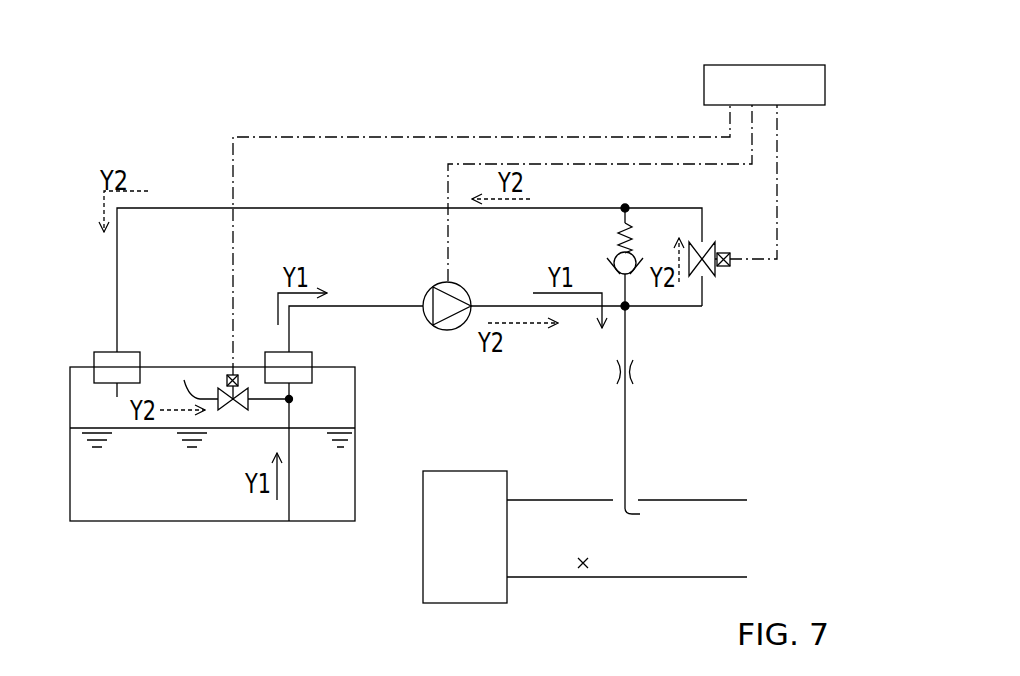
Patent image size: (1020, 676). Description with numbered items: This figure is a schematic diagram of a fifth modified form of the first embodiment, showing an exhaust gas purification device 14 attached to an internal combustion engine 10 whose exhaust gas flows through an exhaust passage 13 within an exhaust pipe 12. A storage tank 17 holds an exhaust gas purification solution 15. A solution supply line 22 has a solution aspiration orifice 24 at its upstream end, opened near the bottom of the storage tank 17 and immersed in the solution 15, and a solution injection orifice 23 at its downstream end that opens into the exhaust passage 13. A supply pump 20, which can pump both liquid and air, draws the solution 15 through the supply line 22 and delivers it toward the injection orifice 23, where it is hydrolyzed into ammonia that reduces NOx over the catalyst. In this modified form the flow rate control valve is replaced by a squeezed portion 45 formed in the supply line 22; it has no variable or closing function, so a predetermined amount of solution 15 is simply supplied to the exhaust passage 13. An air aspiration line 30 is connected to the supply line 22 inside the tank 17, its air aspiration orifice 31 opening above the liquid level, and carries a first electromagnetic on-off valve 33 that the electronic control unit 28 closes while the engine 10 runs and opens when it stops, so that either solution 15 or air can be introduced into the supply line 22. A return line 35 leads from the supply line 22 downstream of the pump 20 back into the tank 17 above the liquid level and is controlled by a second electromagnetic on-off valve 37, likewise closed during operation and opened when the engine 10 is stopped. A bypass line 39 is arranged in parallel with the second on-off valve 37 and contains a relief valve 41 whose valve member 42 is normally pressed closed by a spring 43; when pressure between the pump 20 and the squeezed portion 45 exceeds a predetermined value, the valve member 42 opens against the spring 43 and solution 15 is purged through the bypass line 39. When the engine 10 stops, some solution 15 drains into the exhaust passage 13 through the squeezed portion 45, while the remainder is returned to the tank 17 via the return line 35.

The internal combustion engine 10 is at (462, 483).
The exhaust pipe 12 is at (685, 500).
The exhaust passage 13 is at (583, 575).
The exhaust gas purification device 14 is at (198, 172).
The exhaust gas purification solution 15 is at (173, 493).
The storage tank 17 is at (70, 380).
The supply pump 20 is at (468, 284).
The solution supply line 22 is at (378, 306).
The solution injection orifice 23 is at (640, 514).
The solution aspiration orifice 24 is at (289, 521).
The electronic control unit 28 is at (787, 65).
The air aspiration line 30 is at (212, 398).
The air aspiration orifice 31 is at (184, 380).
The first electromagnetic on-off valve 33 is at (243, 386).
The return line 35 is at (116, 246).
The second electromagnetic on-off valve 37 is at (717, 274).
The bypass line 39 is at (629, 311).
The relief valve 41 is at (607, 238).
The valve member 42 is at (629, 254).
The spring 43 is at (636, 247).
The squeezed portion 45 is at (612, 370).